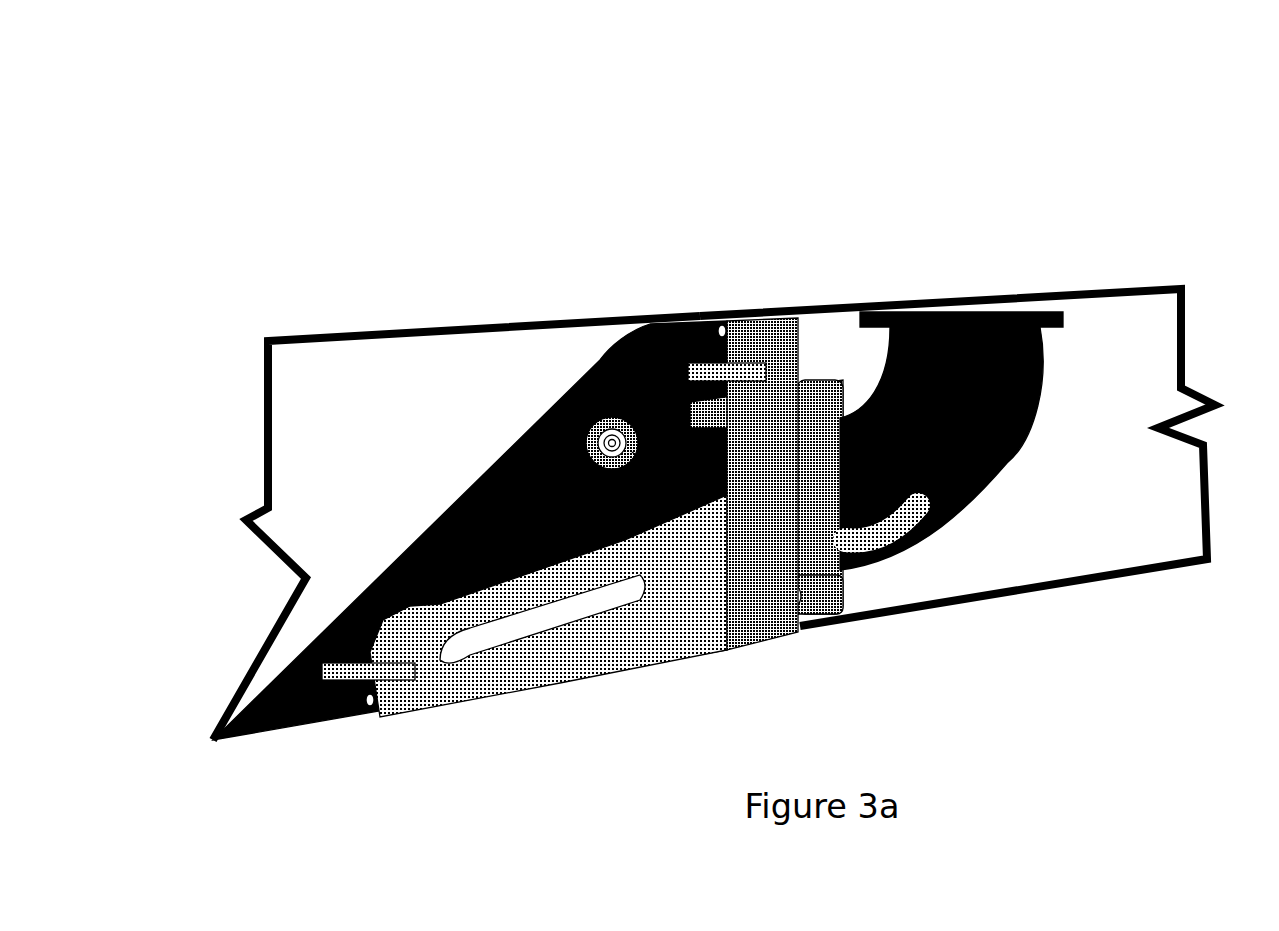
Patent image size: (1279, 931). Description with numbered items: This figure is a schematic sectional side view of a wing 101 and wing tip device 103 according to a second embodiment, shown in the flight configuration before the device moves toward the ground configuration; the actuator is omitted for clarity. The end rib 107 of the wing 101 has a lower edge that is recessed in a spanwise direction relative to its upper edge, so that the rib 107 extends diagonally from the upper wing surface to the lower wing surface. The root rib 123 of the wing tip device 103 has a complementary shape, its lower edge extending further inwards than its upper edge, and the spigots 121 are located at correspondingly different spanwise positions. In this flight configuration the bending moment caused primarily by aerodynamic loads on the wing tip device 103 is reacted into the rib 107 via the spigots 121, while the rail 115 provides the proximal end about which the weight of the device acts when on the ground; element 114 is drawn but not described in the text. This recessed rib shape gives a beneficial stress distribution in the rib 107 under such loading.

The wing 101 is at (405, 307).
The wing tip device 103 is at (1155, 270).
The end rib 107 is at (680, 304).
The lever 114 is at (741, 504).
The rail 115 is at (1038, 470).
The spigots 121 is at (716, 322).
The root rib 123 is at (771, 315).